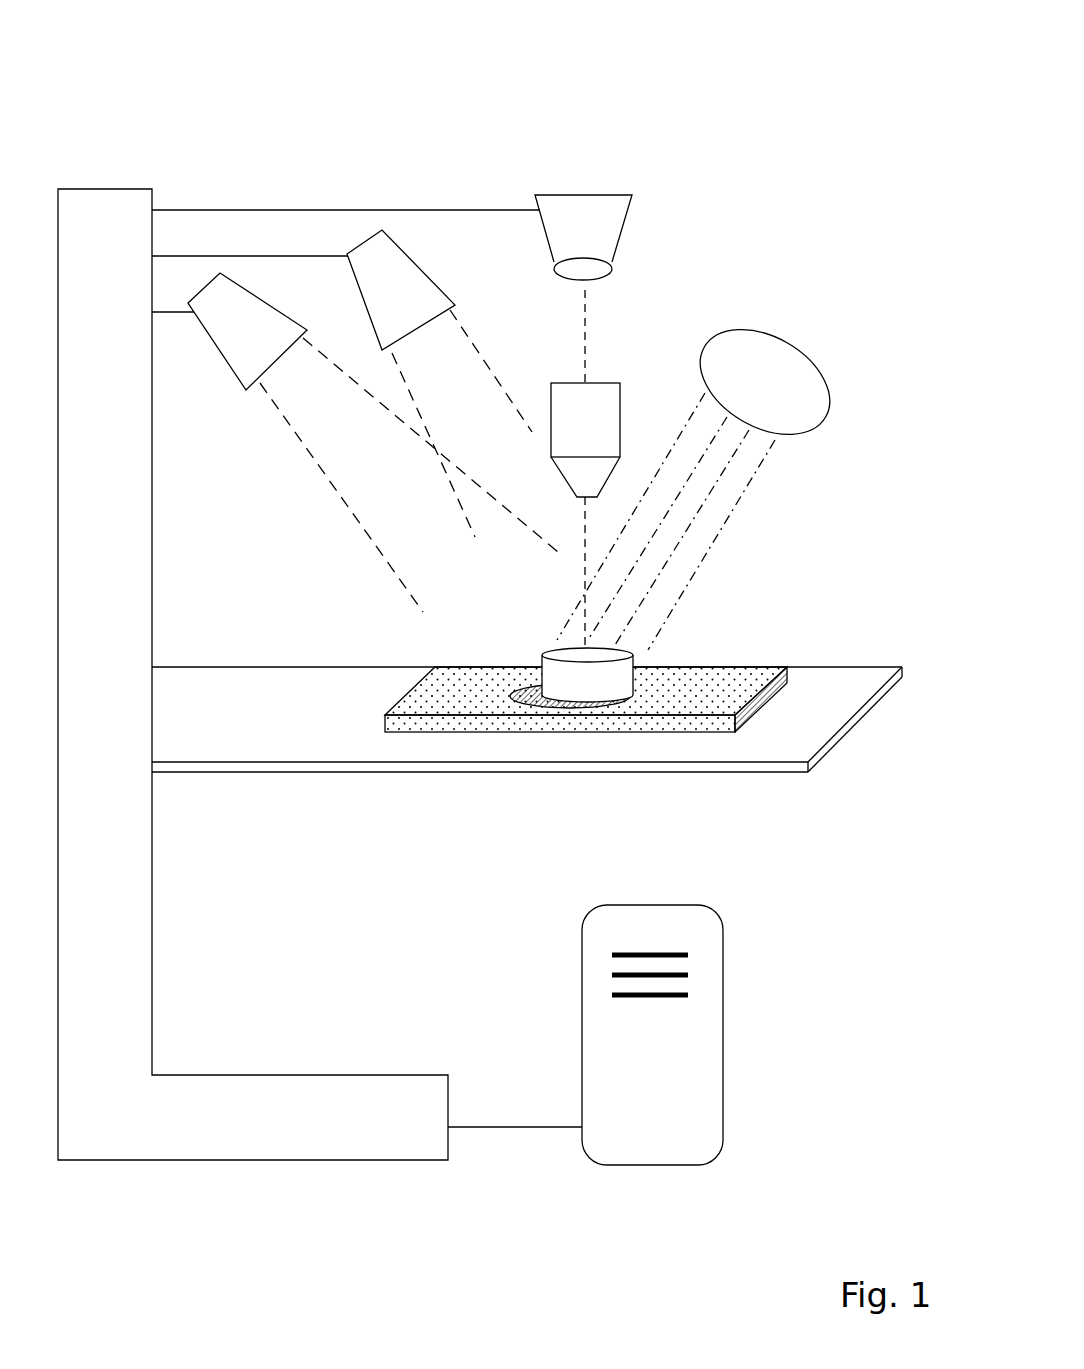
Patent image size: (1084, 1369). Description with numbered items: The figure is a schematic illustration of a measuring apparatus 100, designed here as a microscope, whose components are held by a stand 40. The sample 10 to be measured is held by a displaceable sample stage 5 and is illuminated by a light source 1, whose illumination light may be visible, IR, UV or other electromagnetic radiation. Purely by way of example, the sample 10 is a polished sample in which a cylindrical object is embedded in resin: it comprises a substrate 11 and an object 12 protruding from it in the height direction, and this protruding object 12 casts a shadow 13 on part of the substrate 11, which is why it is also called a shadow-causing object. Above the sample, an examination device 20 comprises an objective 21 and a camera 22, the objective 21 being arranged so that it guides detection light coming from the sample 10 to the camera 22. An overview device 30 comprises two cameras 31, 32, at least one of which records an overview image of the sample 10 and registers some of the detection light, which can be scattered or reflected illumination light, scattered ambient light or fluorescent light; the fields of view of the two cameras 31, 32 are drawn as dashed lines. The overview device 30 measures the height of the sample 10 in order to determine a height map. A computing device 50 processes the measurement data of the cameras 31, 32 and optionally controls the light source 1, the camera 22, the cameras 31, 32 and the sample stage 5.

The measuring apparatus 100 is at (757, 74).
The light source 1 is at (771, 394).
The sample stage 5 is at (850, 723).
The sample 10 is at (779, 656).
The substrate 11 is at (443, 688).
The object 12 is at (570, 680).
The shadow 13 is at (527, 690).
The examination device 20 is at (672, 281).
The objective 21 is at (602, 441).
The camera 22 is at (600, 241).
The overview device 30 is at (235, 429).
The camera 31 is at (257, 339).
The camera 32 is at (408, 301).
The stand 40 is at (118, 639).
The computing device 50 is at (666, 1121).